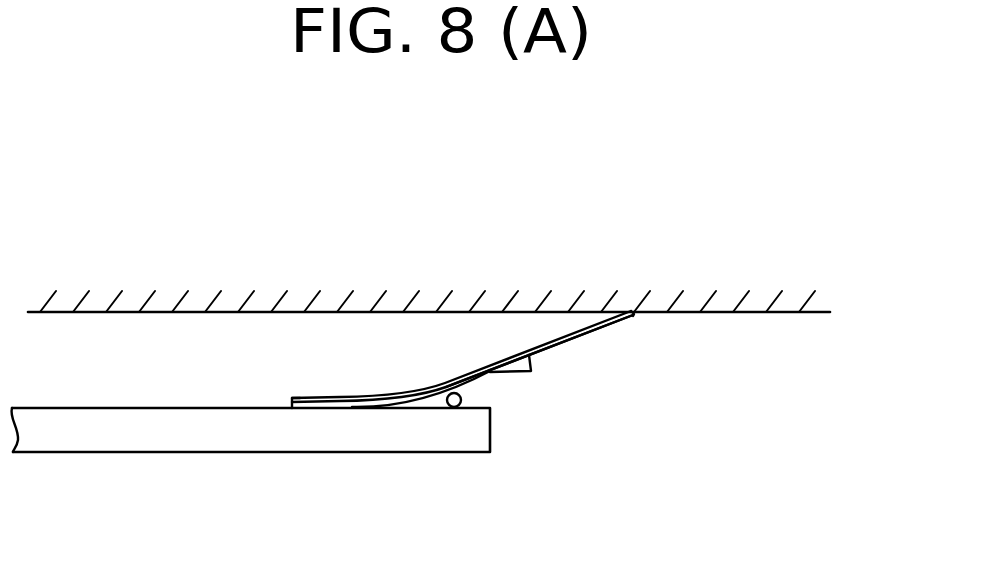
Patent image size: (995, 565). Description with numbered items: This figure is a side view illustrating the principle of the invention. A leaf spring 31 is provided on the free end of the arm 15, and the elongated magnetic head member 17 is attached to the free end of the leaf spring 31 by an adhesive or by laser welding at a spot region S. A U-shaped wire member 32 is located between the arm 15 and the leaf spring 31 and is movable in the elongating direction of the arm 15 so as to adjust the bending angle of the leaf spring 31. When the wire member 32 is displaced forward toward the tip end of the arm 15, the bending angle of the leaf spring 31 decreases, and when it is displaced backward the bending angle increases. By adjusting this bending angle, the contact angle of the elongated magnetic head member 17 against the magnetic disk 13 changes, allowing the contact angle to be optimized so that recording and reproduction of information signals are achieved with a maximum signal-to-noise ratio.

The magnetic disk 13 is at (626, 293).
The arm 15 is at (278, 438).
The leaf spring 31 is at (393, 392).
The spot region S is at (305, 380).
The elongated magnetic head member 17 is at (583, 337).
The U-shaped wire member 32 is at (462, 396).